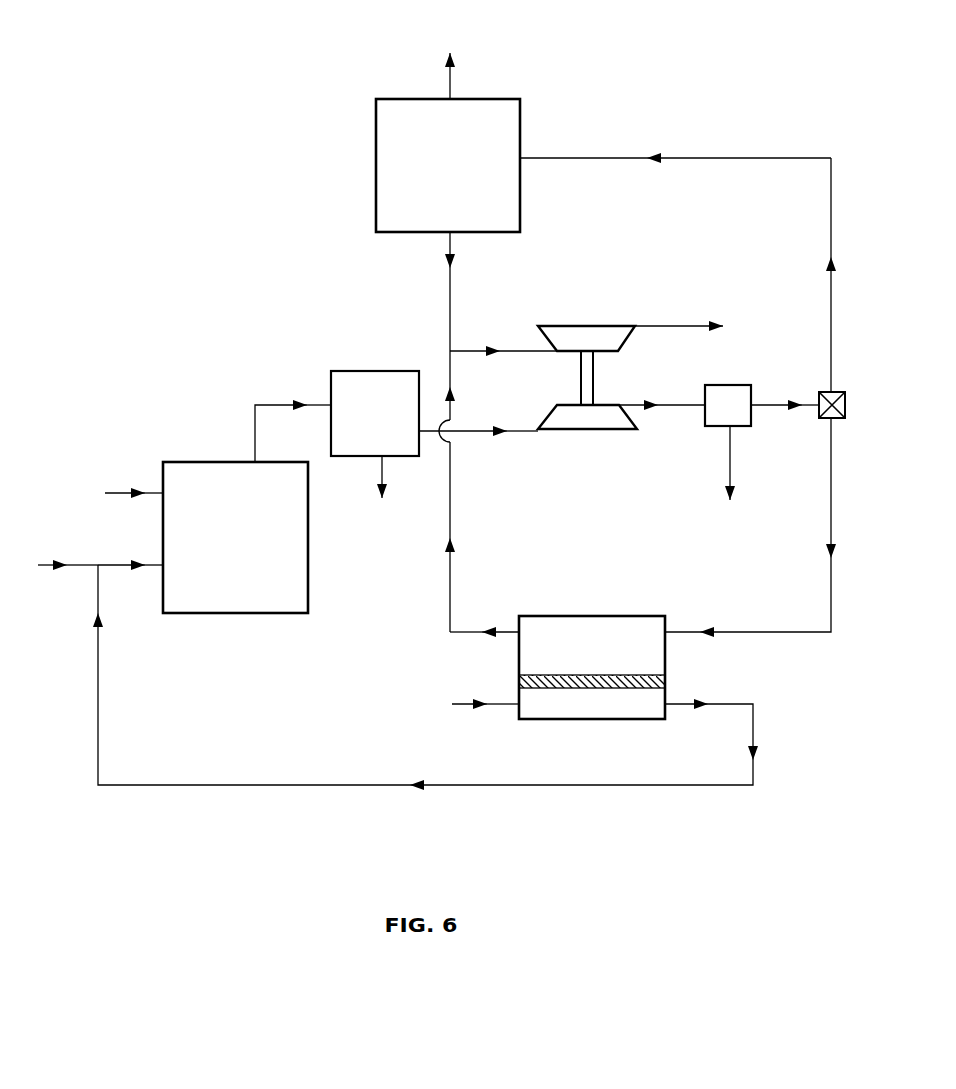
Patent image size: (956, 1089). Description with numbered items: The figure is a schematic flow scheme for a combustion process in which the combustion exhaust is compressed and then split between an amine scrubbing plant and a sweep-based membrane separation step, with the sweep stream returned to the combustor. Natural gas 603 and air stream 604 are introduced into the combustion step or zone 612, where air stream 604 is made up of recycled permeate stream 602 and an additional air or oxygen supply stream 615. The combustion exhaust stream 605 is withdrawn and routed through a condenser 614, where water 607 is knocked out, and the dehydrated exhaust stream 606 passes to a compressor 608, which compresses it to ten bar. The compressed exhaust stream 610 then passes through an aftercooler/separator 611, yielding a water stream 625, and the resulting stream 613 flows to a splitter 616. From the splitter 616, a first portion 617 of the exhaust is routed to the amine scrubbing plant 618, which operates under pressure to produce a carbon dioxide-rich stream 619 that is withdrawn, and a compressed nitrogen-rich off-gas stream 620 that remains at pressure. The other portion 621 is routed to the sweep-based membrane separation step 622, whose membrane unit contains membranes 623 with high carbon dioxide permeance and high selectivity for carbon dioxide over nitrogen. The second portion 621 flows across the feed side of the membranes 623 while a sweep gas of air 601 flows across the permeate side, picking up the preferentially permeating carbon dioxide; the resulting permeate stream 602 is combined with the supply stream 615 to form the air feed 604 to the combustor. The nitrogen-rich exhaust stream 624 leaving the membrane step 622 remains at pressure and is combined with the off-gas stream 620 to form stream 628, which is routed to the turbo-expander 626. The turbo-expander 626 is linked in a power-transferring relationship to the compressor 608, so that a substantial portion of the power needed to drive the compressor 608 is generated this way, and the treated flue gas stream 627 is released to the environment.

The sweep gas of air 601 is at (463, 704).
The permeate stream 602 is at (425, 689).
The natural gas 603 is at (110, 493).
The air stream 604 is at (130, 552).
The combustion exhaust stream 605 is at (293, 420).
The dehydrated exhaust stream 606 is at (478, 445).
The water 607 is at (382, 493).
The compressor 608 is at (582, 432).
The compressed exhaust stream 610 is at (662, 391).
The aftercooler/separator 611 is at (717, 427).
The combustion step or zone 612 is at (192, 462).
The stream 613 is at (785, 391).
The condenser 614 is at (380, 371).
The additional air or oxygen supply stream 615 is at (61, 552).
The splitter 616 is at (827, 418).
The first portion of the exhaust stream 617 is at (675, 174).
The amine scrubbing plant 618 is at (376, 172).
The carbon dioxide-rich stream 619 is at (450, 61).
The compressed nitrogen-rich off-gas stream 620 is at (475, 291).
The other portion of the exhaust stream 621 is at (748, 395).
The sweep-based membrane separation step 622 is at (628, 616).
The membranes 623 is at (667, 677).
The nitrogen-rich exhaust stream 624 is at (469, 491).
The water stream 625 is at (730, 477).
The turbo-expander 626 is at (615, 326).
The treated flue gas stream 627 is at (703, 327).
The stream 628 is at (503, 338).